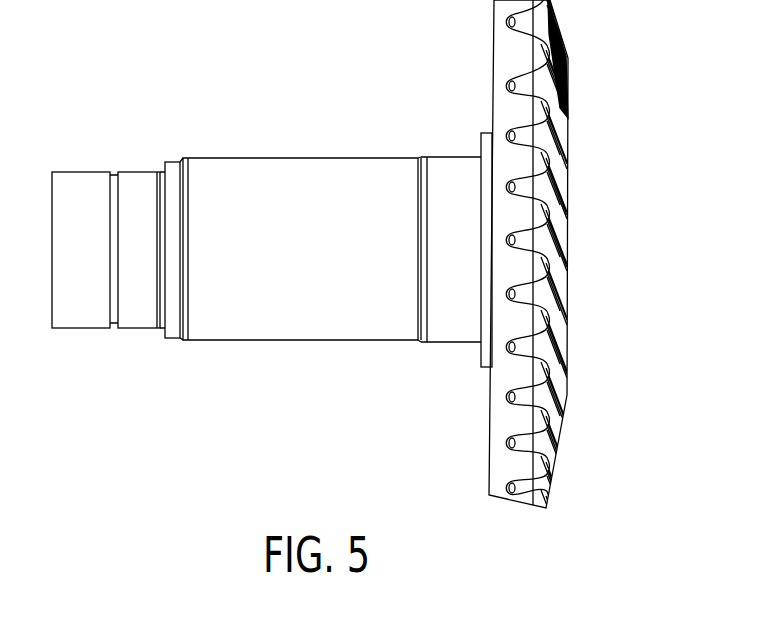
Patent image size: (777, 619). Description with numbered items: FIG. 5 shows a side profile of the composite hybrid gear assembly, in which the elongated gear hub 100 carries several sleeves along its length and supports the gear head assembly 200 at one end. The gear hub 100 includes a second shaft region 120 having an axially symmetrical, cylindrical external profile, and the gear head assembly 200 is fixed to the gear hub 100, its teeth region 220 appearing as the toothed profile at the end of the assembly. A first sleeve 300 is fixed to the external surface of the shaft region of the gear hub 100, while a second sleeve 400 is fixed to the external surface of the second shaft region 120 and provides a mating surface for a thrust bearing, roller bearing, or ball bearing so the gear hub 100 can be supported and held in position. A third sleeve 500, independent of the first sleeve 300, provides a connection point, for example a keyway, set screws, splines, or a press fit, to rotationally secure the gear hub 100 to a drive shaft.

The gear hub 100 is at (487, 378).
The second shaft region 120 is at (338, 175).
The first sleeve 300 is at (143, 182).
The second sleeve 400 is at (449, 175).
The third sleeve 500 is at (82, 182).
The gear head assembly 200 is at (592, 279).
The teeth region 220 is at (553, 375).